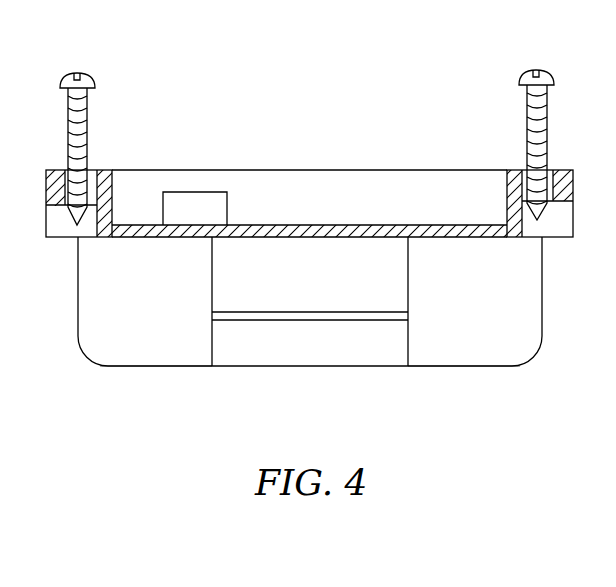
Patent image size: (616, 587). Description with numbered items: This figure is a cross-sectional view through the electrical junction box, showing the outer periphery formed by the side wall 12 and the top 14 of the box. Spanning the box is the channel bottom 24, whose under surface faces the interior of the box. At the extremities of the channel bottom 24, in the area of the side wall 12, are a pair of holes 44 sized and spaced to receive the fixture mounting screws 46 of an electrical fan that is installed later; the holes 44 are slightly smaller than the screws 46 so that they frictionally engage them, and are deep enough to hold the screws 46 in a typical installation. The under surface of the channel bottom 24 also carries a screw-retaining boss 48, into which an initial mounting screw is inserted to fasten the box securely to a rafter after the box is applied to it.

The side wall 12 is at (542, 286).
The top 14 is at (187, 368).
The channel bottom 24 is at (323, 226).
The holes 44 is at (90, 172).
The fixture mounting screws 46 is at (88, 76).
The screw-retaining boss 48 is at (188, 192).